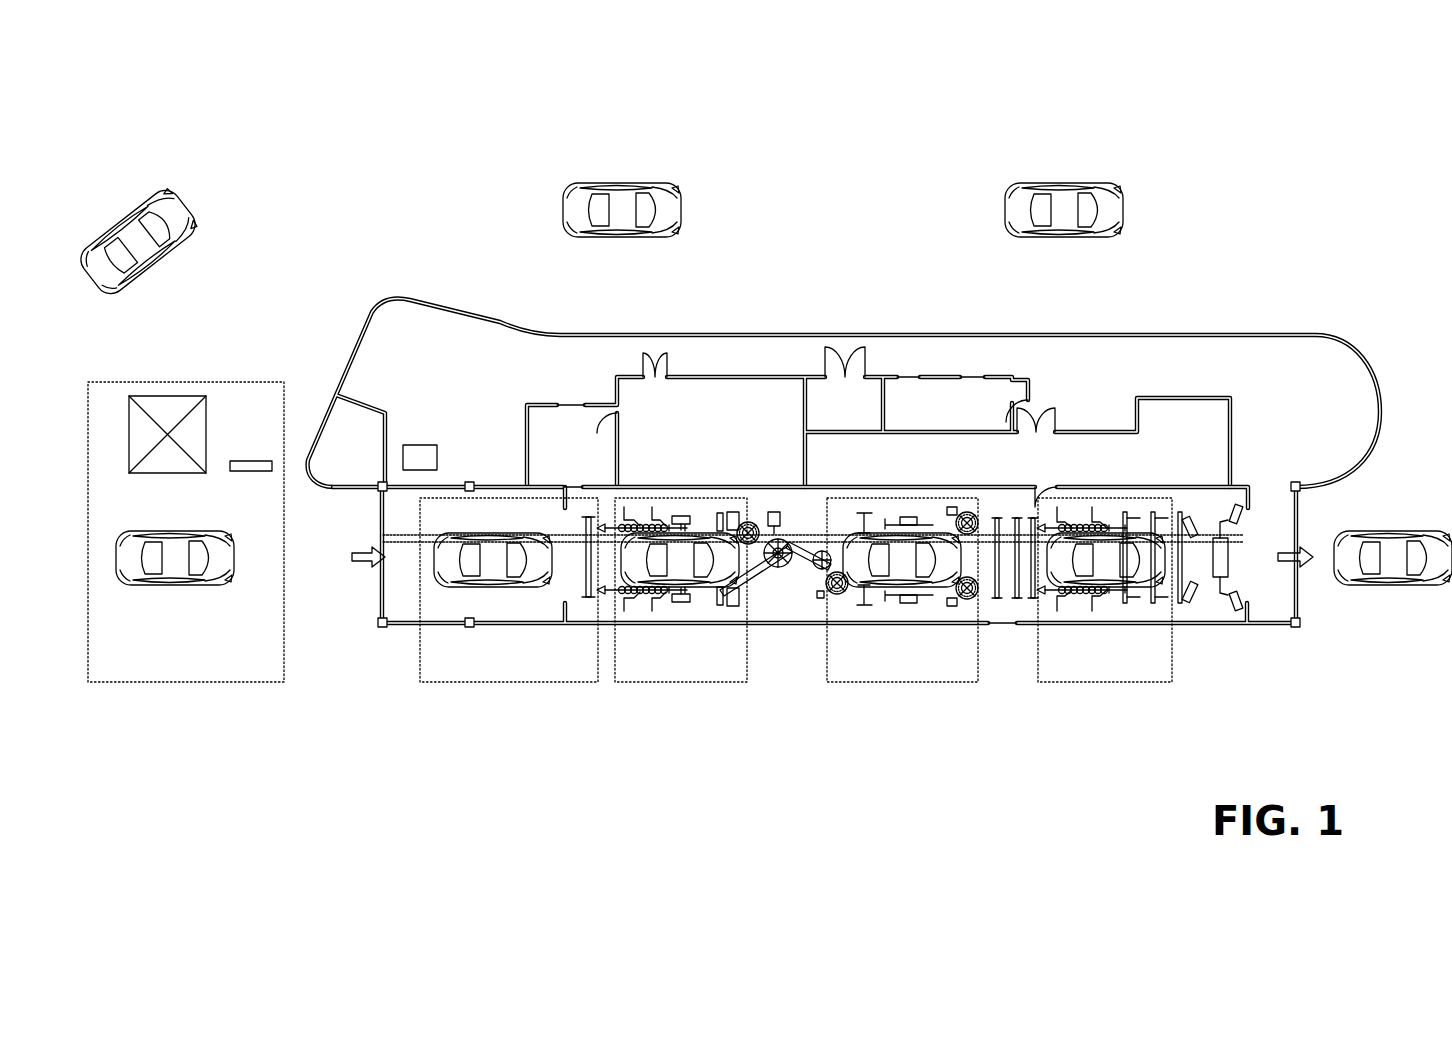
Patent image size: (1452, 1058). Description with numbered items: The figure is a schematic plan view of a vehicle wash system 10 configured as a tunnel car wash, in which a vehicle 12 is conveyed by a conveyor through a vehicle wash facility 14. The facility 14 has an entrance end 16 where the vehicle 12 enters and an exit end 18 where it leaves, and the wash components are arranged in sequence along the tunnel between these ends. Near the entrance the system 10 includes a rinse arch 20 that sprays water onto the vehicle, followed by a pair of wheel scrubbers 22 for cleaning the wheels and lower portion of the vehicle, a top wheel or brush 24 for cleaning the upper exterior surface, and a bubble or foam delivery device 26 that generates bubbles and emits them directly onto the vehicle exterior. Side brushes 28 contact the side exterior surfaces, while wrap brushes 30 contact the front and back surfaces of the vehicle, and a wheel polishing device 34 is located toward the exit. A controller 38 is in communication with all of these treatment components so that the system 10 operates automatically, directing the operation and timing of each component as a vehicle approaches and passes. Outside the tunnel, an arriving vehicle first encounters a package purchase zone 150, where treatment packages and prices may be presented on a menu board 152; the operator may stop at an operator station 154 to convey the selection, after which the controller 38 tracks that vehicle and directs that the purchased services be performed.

The vehicle wash system 10 is at (1155, 163).
The vehicle 12 is at (660, 186).
The vehicle wash facility 14 is at (1168, 333).
The entrance end 16 is at (372, 605).
The exit end 18 is at (1292, 537).
The rinse arch 20 is at (585, 520).
The wheel scrubbers 22 is at (640, 522).
The top wheel or brush 24 is at (677, 520).
The bubble or foam delivery device 26 is at (702, 520).
The side brushes 28 is at (755, 525).
The wrap brushes 30 is at (822, 558).
The wheel polishing device 34 is at (1062, 594).
The controller 38 is at (420, 452).
The package purchase zone 150 is at (140, 688).
The menu board 152 is at (252, 462).
The operator station 154 is at (175, 398).